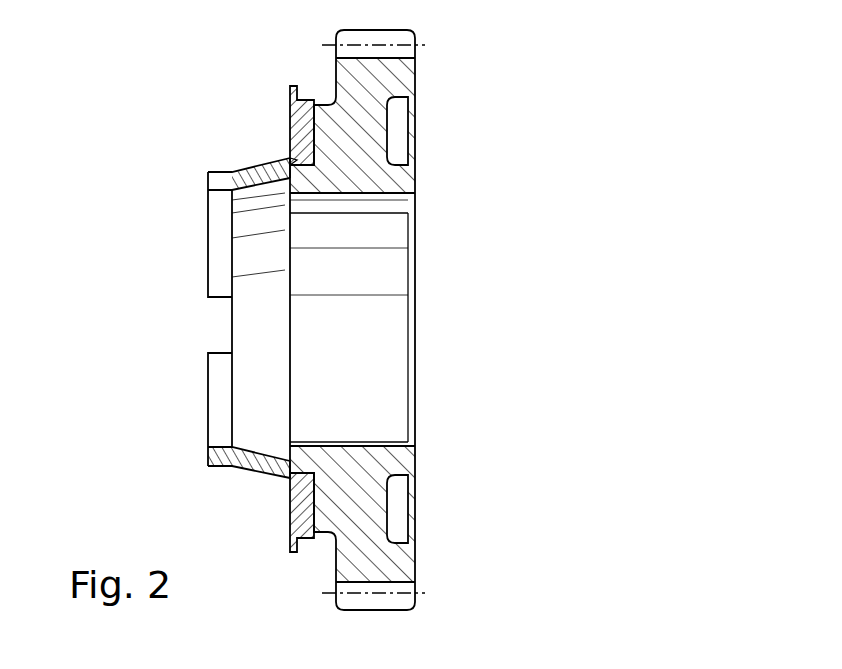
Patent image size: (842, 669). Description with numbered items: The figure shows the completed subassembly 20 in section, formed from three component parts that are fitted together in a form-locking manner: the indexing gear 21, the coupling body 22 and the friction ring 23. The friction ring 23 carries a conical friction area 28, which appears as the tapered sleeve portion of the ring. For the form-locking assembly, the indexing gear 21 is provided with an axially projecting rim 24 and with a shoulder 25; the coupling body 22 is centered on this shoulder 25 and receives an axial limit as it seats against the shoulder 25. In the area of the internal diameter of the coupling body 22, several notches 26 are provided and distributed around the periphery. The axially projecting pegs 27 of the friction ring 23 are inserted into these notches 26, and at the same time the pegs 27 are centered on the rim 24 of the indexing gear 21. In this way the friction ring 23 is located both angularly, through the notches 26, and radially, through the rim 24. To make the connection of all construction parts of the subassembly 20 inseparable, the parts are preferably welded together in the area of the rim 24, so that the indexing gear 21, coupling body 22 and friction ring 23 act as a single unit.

The completed subassembly 20 is at (277, 500).
The indexing gear 21 is at (338, 558).
The coupling body 22 is at (289, 125).
The friction ring 23 is at (243, 470).
The axially projecting rim 24 is at (298, 165).
The shoulder 25 is at (297, 158).
The notches 26 is at (338, 460).
The axially projecting pegs 27 is at (297, 457).
The conical friction area 28 is at (243, 170).